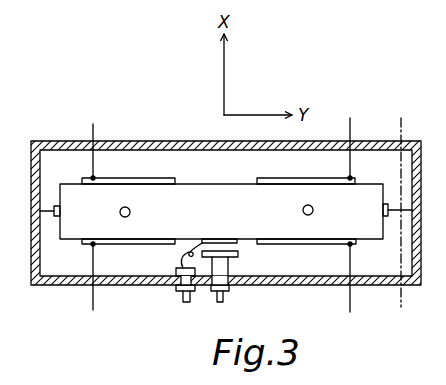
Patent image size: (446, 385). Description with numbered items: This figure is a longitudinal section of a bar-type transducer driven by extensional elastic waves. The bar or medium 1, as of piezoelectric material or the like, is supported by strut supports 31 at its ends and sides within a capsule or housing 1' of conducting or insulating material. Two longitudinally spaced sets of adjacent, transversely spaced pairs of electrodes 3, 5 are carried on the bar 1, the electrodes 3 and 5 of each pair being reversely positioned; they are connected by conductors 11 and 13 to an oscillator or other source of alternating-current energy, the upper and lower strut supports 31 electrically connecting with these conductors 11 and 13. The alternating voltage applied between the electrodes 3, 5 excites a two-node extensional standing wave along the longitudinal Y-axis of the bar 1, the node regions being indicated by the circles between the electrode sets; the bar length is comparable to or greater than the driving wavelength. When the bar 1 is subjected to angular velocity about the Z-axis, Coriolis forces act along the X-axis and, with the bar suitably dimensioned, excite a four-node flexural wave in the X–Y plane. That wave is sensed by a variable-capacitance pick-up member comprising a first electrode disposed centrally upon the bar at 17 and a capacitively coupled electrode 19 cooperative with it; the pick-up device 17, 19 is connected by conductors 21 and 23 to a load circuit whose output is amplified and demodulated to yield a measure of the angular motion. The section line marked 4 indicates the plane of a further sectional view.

The capsule or housing 1' is at (226, 194).
The bar or medium 1 is at (226, 202).
The electrodes 3 is at (120, 174).
The electrodes 5 is at (126, 244).
The conductor 11 is at (93, 124).
The conductor 13 is at (93, 297).
The first electrode of pick-up member 17 is at (222, 237).
The capacitively coupled electrode 19 is at (238, 256).
The conductor 21 is at (183, 297).
The conductor 23 is at (224, 297).
The strut support 31 is at (314, 208).
The section line 4- 4 is at (401, 120).